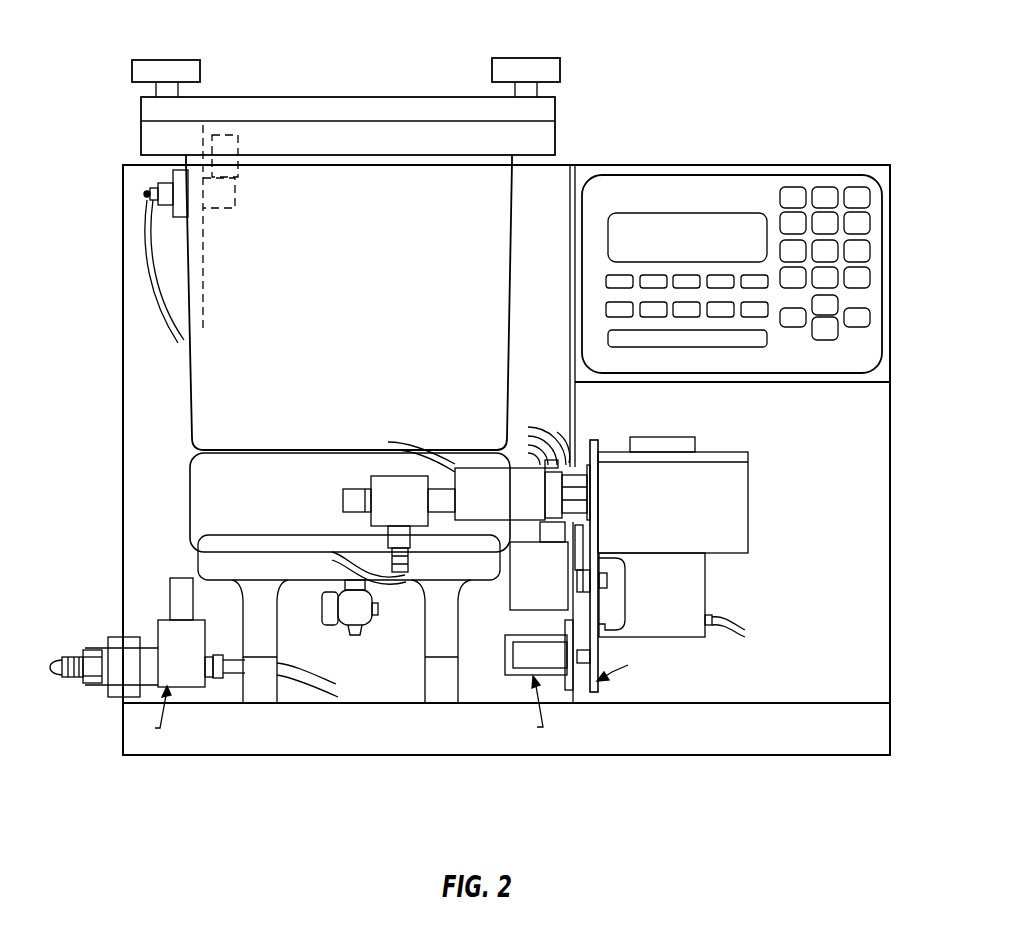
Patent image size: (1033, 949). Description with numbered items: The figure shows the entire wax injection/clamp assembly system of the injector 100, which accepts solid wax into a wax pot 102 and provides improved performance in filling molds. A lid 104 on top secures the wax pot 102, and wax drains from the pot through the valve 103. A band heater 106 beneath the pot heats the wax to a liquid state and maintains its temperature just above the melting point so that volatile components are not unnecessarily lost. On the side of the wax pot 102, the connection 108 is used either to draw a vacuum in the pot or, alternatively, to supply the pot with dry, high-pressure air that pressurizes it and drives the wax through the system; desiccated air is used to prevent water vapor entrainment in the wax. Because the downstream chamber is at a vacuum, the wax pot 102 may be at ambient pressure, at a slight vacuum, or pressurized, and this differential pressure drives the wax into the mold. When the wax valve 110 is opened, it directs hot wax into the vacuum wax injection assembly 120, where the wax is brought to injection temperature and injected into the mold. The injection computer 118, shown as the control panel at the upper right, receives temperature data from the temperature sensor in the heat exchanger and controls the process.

The injector 100 is at (781, 43).
The wax pot 102 is at (371, 328).
The valve 103 is at (360, 639).
The lid 104 is at (331, 96).
The band heater 106 is at (289, 511).
The connection 108 is at (190, 368).
The wax valve 110 is at (419, 511).
The injection computer 118 is at (711, 209).
The vacuum wax injection assembly 120 is at (524, 512).